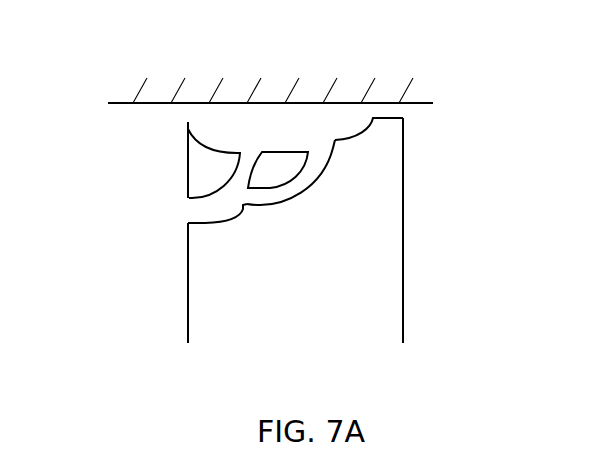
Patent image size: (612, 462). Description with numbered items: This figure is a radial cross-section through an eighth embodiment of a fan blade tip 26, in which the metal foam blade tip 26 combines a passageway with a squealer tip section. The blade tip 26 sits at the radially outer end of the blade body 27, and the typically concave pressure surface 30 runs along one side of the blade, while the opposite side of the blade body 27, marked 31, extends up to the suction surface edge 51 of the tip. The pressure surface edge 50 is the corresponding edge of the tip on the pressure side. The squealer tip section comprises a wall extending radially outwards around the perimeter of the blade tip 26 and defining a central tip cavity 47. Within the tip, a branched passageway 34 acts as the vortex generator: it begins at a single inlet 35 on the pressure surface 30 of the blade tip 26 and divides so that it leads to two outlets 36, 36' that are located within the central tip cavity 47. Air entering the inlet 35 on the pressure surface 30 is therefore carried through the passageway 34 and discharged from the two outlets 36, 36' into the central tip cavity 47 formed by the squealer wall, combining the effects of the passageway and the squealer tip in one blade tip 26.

The blade tip 26 is at (433, 166).
The blade body 27 is at (352, 308).
The pressure surface 30 is at (188, 283).
The second side wall 31 is at (406, 260).
The passageway 34 is at (218, 205).
The inlet 35 is at (188, 212).
The outlet 36 is at (215, 92).
The outlet 36' is at (316, 116).
The central tip cavity 47 is at (267, 145).
The pressure surface edge 50 is at (187, 121).
The suction surface edge 51 is at (407, 120).